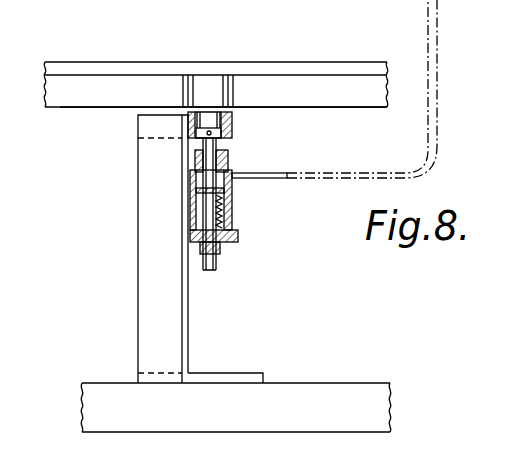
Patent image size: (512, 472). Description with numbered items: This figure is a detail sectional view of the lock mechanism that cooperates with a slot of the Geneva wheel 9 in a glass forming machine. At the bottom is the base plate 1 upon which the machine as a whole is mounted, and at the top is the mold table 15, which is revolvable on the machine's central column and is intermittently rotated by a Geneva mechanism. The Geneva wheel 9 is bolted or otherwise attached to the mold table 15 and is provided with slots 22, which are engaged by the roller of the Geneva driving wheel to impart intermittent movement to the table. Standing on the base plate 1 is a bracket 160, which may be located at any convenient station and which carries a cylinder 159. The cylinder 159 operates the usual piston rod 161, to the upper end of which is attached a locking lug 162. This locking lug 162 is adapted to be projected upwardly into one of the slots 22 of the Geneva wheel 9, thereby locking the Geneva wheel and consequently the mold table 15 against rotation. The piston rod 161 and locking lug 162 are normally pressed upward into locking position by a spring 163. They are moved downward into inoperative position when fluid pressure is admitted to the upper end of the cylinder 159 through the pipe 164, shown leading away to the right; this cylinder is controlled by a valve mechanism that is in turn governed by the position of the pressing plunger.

The base plate 1 is at (100, 398).
The Geneva wheel 9 is at (113, 100).
The mold table 15 is at (155, 62).
The slots 22 is at (207, 83).
The cylinder 159 is at (233, 209).
The bracket 160 is at (146, 184).
The piston rod 161 is at (232, 158).
The locking lug 162 is at (229, 126).
The spring 163 is at (233, 223).
The pipe 164 is at (260, 175).